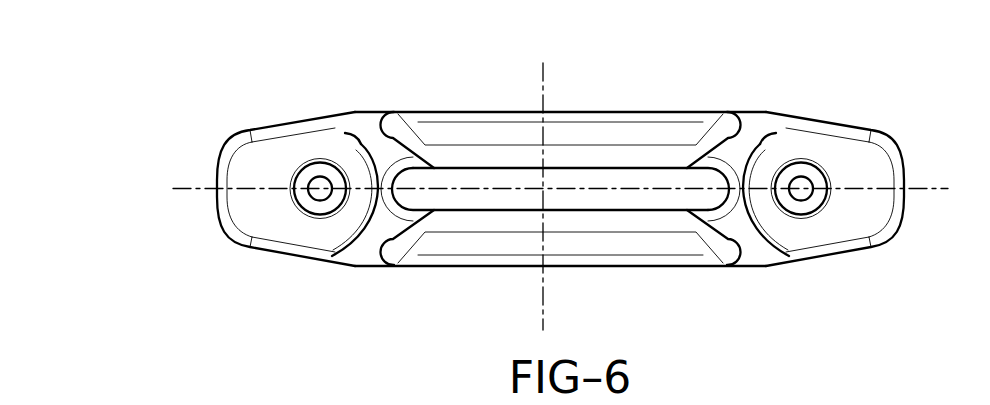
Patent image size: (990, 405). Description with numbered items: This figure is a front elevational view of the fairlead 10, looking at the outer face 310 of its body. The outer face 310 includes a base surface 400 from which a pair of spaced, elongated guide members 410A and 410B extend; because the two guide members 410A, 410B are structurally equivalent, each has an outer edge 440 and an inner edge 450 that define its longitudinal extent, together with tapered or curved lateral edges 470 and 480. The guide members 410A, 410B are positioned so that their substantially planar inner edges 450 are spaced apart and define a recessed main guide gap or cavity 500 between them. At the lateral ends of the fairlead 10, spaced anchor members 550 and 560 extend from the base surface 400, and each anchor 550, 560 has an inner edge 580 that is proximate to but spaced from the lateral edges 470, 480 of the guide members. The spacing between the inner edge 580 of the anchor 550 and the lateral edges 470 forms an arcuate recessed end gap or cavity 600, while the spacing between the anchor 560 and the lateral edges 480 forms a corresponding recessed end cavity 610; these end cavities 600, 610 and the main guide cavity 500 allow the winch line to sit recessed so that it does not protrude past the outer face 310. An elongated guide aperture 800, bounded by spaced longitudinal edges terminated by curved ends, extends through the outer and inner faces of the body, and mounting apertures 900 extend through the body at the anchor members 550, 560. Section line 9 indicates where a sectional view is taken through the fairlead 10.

The section line 9- 9 is at (173, 188).
The fairlead 10 is at (543, 63).
The outer face 310 is at (505, 243).
The base surface 400 is at (351, 125).
The guide member 410A is at (662, 134).
The guide member 410B is at (662, 243).
The outer edge 440 is at (517, 110).
The inner edge 450 is at (478, 165).
The lateral edge 470 is at (381, 112).
The lateral edge 480 is at (747, 120).
The recessed main guide gap or cavity 500 is at (507, 180).
The anchor member 550 is at (278, 222).
The anchor member 560 is at (842, 222).
The inner edge 580 is at (365, 148).
The recessed end gap or cavity 600 is at (362, 130).
The recessed end gap or cavity 610 is at (760, 130).
The guide aperture 800 is at (605, 212).
The mounting aperture 900 is at (318, 186).